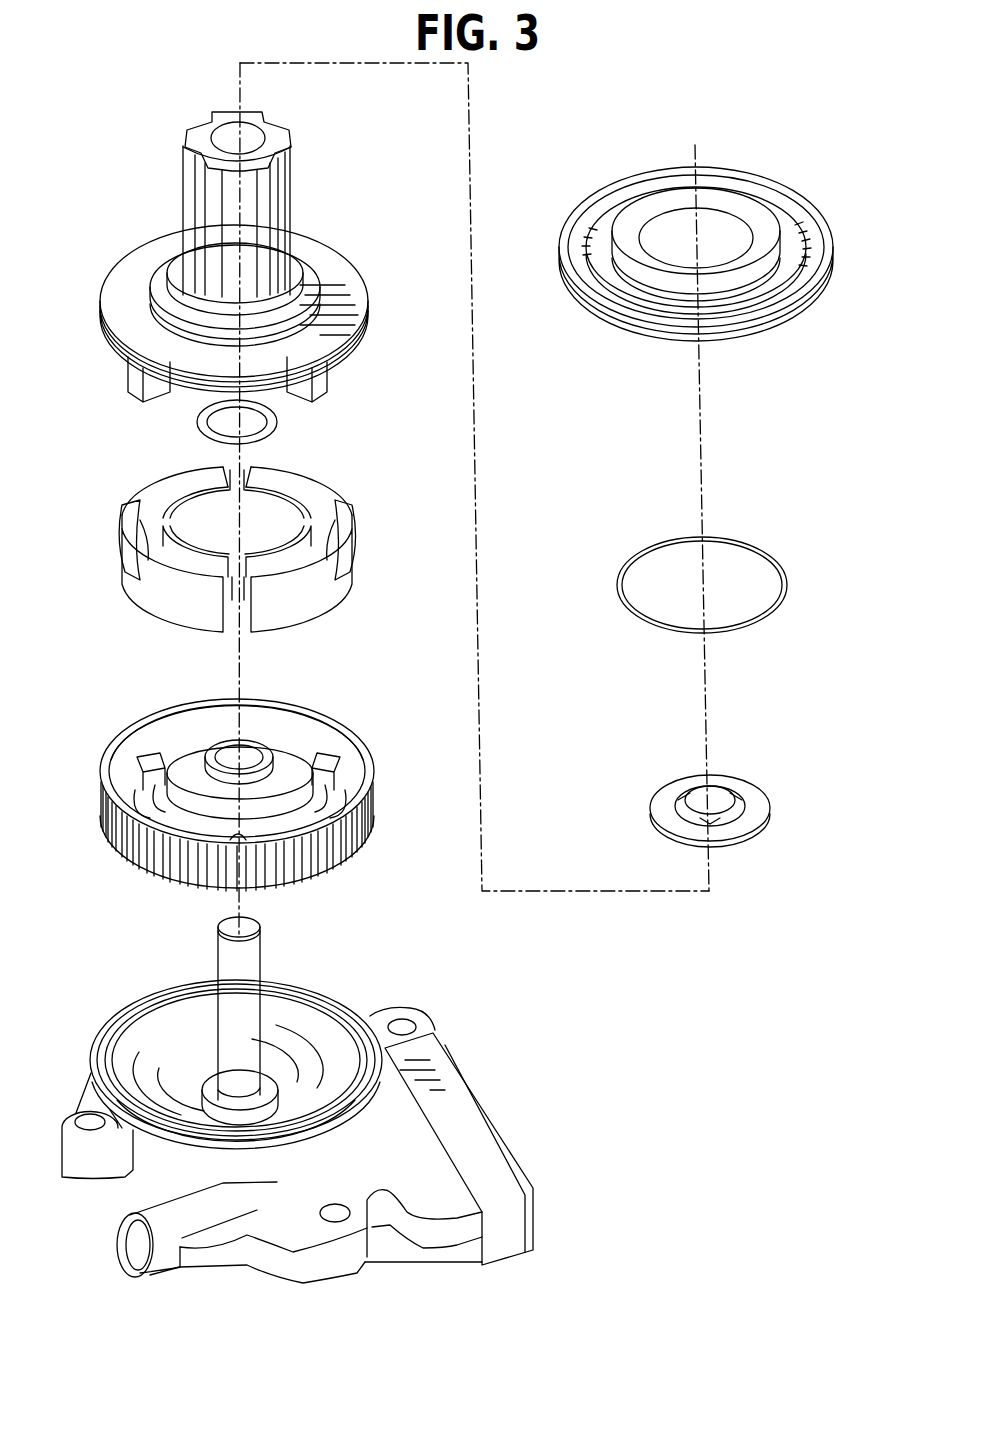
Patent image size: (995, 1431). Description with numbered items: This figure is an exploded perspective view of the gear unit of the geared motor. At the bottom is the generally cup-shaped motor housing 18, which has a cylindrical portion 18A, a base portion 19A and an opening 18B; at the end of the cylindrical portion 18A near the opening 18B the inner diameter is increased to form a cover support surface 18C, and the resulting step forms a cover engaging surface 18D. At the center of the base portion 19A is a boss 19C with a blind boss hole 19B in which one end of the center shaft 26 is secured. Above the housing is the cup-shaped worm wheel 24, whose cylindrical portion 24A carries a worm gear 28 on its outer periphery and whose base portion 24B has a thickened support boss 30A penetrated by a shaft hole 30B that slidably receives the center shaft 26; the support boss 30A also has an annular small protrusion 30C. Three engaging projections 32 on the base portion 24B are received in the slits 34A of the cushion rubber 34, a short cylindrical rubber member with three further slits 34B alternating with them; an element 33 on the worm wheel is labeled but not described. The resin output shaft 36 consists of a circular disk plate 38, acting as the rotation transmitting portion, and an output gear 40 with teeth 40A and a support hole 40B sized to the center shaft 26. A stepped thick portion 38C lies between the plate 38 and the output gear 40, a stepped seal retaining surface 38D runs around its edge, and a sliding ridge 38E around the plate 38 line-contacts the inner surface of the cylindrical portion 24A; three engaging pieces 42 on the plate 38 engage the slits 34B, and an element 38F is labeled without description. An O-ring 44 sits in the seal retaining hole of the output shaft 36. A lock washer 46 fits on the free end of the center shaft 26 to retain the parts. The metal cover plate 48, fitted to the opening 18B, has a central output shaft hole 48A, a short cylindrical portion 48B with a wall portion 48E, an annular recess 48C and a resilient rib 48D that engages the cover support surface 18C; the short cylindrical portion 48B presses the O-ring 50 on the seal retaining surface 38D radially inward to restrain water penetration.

The motor housing 18 is at (493, 1065).
The cylindrical portion 18A is at (84, 1043).
The opening 18B is at (178, 992).
The cover support surface 18C is at (165, 998).
The cover engaging surface 18D is at (120, 1018).
The base portion 19A is at (168, 1108).
The boss hole 19B is at (205, 1092).
The boss 19C is at (255, 1085).
The worm wheel 24 is at (379, 713).
The cylindrical portion 24A is at (363, 822).
The base portion 24B is at (350, 782).
The center shaft 26 is at (262, 958).
The worm gear 28 is at (350, 850).
The support boss 30A is at (190, 765).
The shaft hole 30B is at (255, 752).
The annular small protrusion 30C is at (262, 752).
The engaging projections 32 is at (145, 752).
The tooth 33 is at (345, 860).
The cushion rubber 34 is at (377, 534).
The slits 34A is at (140, 510).
The slits 34B is at (243, 473).
The output shaft 36 is at (377, 160).
The disk plate 38 is at (374, 250).
The thick portion 38C is at (300, 255).
The seal retaining surface 38D is at (300, 278).
The sliding ridge 38E is at (350, 344).
The disc surface 38F is at (187, 327).
The output gear 40 is at (301, 119).
The teeth 40A is at (283, 128).
The support hole 40B is at (253, 136).
The engaging pieces 42 is at (327, 378).
The O-ring 44 is at (278, 424).
The lock washer 46 is at (752, 808).
The cover plate 48 is at (791, 150).
The output shaft hole 48A is at (705, 210).
The short cylindrical portion 48B is at (730, 285).
The annular recess 48C is at (775, 268).
The rib 48D is at (805, 205).
The wall portion 48E is at (700, 285).
The O-ring 50 is at (745, 622).